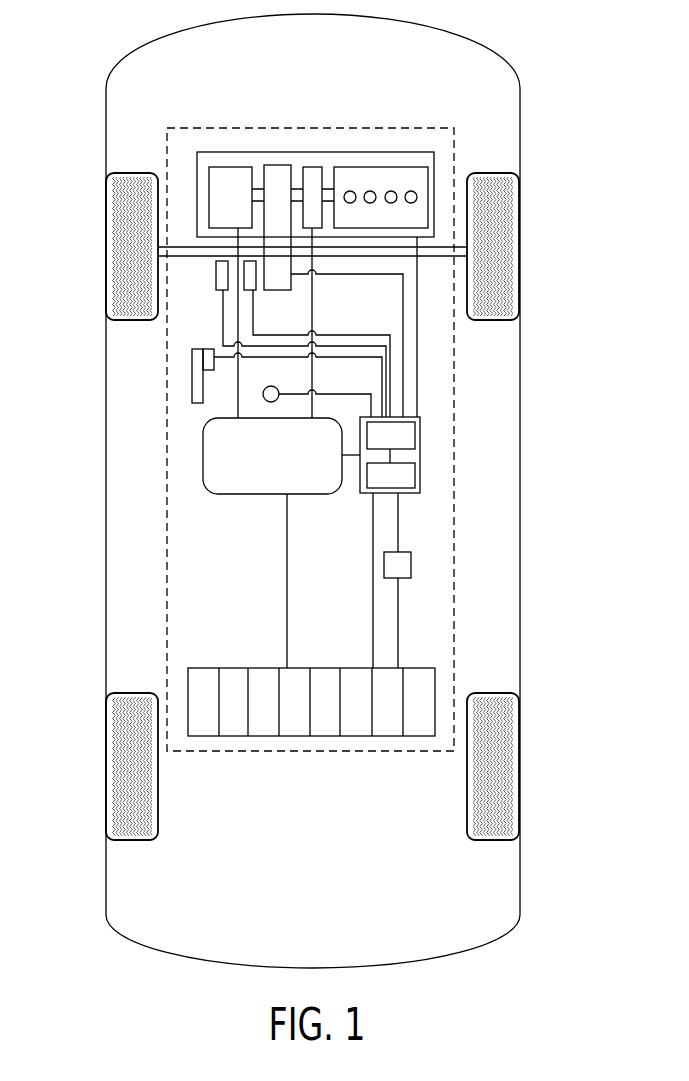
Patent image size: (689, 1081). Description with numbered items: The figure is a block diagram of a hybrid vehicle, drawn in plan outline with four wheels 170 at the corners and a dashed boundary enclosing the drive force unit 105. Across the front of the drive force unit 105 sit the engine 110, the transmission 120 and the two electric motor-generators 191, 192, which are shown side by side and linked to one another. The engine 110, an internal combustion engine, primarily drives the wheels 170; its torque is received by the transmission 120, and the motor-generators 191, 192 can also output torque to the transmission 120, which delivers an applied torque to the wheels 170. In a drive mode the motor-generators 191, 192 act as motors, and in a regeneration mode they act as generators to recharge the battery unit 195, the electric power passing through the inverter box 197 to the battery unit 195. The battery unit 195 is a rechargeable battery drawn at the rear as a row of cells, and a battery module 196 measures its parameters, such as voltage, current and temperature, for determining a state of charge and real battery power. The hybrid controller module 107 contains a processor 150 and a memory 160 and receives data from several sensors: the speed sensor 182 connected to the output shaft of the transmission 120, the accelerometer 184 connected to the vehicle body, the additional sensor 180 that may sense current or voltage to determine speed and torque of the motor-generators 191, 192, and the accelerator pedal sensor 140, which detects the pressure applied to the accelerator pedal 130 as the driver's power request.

The drive force unit 105 is at (165, 457).
The hybrid controller module 107 is at (423, 457).
The engine 110 is at (380, 167).
The transmission 120 is at (280, 165).
The accelerator pedal 130 is at (195, 379).
The accelerator pedal sensor 140 is at (210, 353).
The processor 150 is at (415, 435).
The memory 160 is at (415, 475).
The wheels 170 is at (112, 250).
The sensor 180 is at (280, 391).
The speed sensor 182 is at (256, 287).
The accelerometer 184 is at (221, 286).
The electric motor-generator 191 is at (232, 166).
The electric motor-generator 192 is at (312, 167).
The battery unit 195 is at (237, 667).
The battery module 196 is at (412, 565).
The inverter box 197 is at (255, 497).